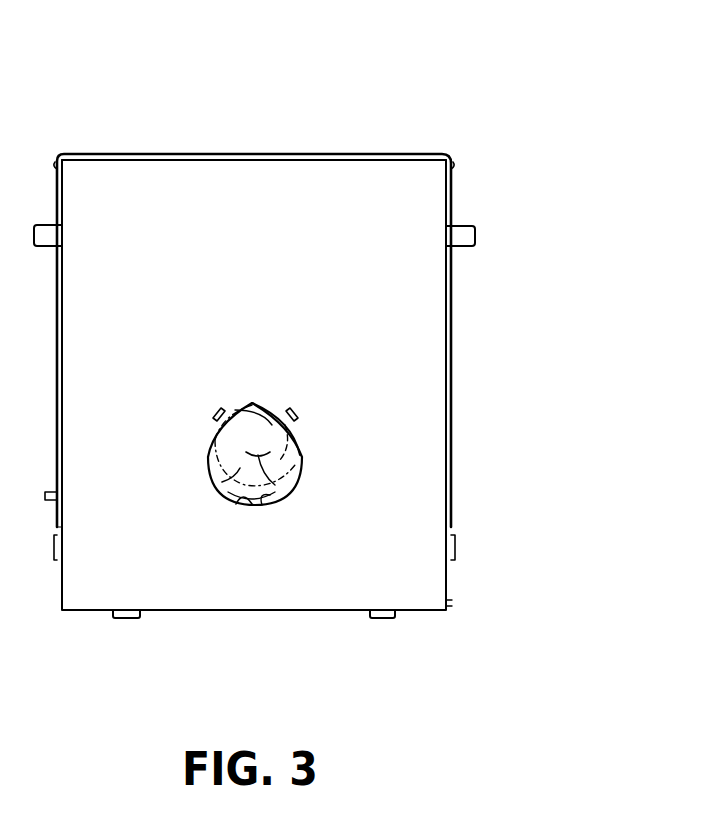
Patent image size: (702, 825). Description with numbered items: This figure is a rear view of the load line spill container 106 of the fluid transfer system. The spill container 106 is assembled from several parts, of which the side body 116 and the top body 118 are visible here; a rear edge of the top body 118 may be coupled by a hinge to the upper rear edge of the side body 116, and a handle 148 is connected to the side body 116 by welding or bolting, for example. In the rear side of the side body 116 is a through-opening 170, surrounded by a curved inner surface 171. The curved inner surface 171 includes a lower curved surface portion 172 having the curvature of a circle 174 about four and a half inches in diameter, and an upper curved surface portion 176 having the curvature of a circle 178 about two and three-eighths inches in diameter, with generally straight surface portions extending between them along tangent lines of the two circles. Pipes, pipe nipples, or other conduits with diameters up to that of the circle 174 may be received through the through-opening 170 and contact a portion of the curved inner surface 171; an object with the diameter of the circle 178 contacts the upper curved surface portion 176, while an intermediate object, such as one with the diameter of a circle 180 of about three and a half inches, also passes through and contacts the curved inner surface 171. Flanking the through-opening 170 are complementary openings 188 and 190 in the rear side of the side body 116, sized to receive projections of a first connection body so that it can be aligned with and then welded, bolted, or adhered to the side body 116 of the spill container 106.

The spill container 106 is at (522, 102).
The side body 116 is at (381, 176).
The top body 118 is at (125, 154).
The handle 148 is at (475, 236).
The through-opening 170 is at (230, 486).
The curved inner surface 171 is at (237, 499).
The lower curved surface portion 172 is at (258, 496).
The circle 174 is at (262, 410).
The upper curved surface portion 176 is at (250, 406).
The circle 178 is at (262, 456).
The circle 180 is at (230, 470).
The opening 188 is at (198, 394).
The opening 190 is at (313, 394).